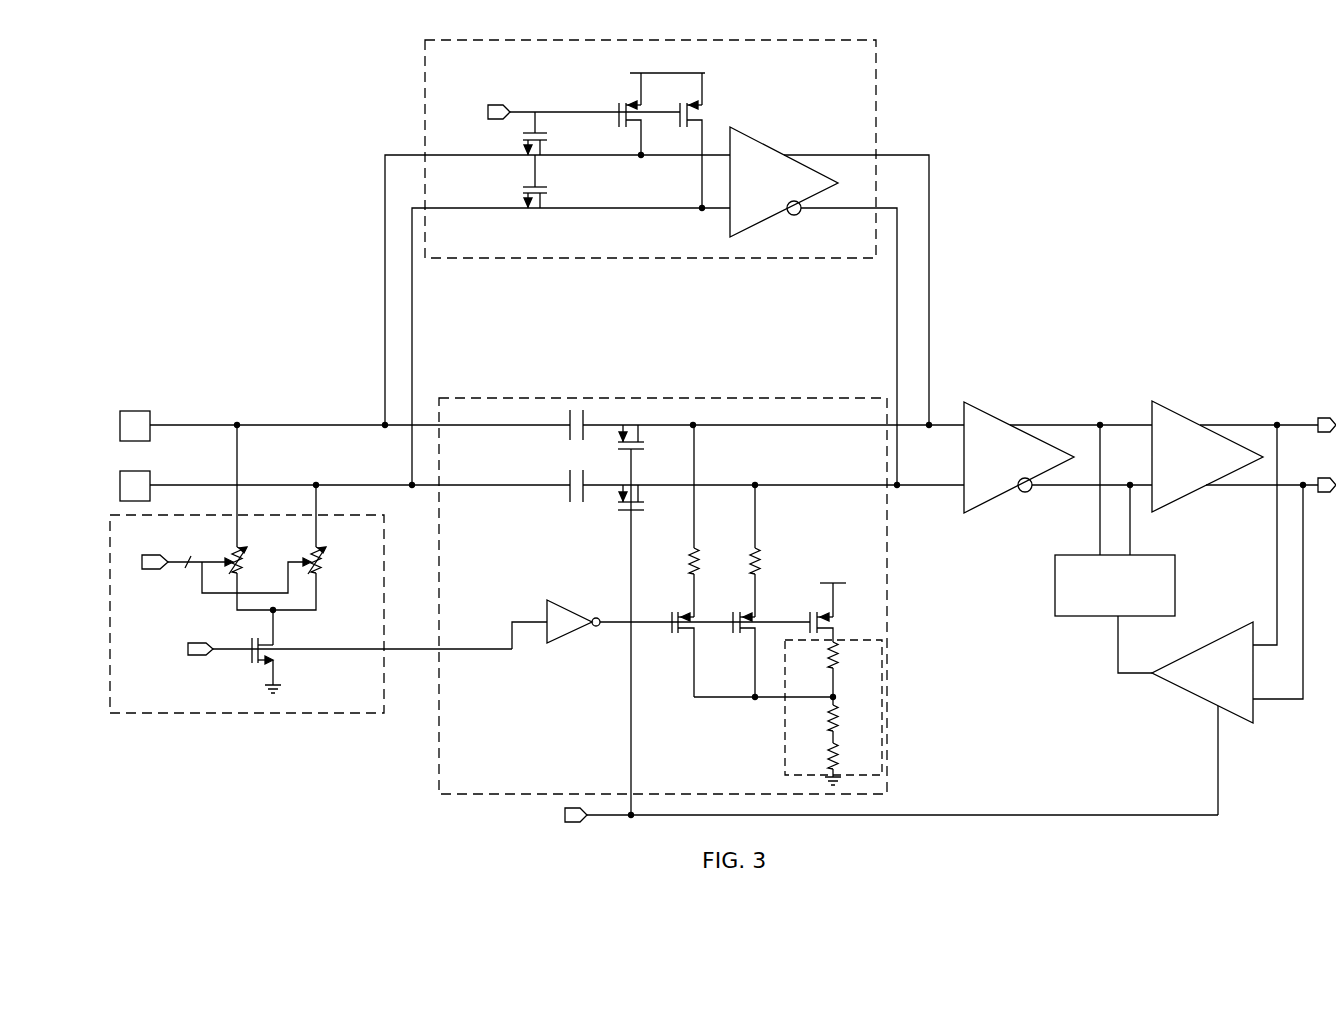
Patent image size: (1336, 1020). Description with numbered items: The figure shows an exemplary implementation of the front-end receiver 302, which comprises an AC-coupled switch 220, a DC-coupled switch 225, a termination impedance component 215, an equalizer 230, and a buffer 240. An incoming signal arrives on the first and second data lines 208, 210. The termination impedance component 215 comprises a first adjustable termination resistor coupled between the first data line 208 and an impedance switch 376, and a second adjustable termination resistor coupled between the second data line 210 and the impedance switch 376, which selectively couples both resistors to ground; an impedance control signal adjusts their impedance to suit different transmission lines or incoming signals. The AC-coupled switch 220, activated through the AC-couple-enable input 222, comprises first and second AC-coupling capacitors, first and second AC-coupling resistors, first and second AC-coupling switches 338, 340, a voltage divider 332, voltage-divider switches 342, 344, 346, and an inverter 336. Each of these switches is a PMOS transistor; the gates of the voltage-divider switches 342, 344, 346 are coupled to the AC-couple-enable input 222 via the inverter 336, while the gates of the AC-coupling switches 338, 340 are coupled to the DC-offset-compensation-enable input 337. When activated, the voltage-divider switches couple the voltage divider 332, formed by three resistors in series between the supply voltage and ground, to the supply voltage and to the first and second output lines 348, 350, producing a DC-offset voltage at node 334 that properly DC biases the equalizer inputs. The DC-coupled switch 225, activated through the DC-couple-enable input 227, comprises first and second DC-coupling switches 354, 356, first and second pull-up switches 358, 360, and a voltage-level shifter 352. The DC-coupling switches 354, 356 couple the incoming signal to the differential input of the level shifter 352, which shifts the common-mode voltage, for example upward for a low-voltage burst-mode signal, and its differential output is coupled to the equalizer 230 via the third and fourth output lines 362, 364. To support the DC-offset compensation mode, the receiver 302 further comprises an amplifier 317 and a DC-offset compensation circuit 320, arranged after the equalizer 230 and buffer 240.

The front-end receiver 302 is at (1260, 56).
The first data line 208 is at (170, 424).
The second data line 210 is at (170, 484).
The termination impedance component 215 is at (345, 515).
The AC-couple-enable input 222 is at (200, 643).
The impedance switch 376 is at (268, 641).
The DC-couple-enable input 227 is at (497, 120).
The first DC-coupling switch 354 is at (545, 141).
The second DC-coupling switch 356 is at (545, 194).
The first pull-up switch 358 is at (634, 104).
The second pull-up switch 360 is at (694, 104).
The voltage-level shifter 352 is at (760, 141).
The third output line 362 is at (880, 155).
The fourth output line 364 is at (880, 208).
The DC-coupled switch 225 is at (650, 166).
The AC-coupled switch 220 is at (703, 398).
The first output line 348 is at (838, 425).
The second output line 350 is at (838, 485).
The first AC-coupling switch 338 is at (638, 431).
The second AC-coupling switch 340 is at (638, 491).
The inverter 336 is at (563, 607).
The voltage-divider switch 342 is at (686, 613).
The voltage-divider switch 344 is at (748, 613).
The voltage-divider switch 346 is at (827, 613).
The node 334 is at (836, 694).
The voltage divider 332 is at (785, 737).
The DC-offset-compensation-enable input 337 is at (575, 823).
The equalizer 230 is at (972, 407).
The buffer 240 is at (1172, 411).
The DC-offset compensation circuit 320 is at (1146, 555).
The amplifier 317 is at (1196, 696).